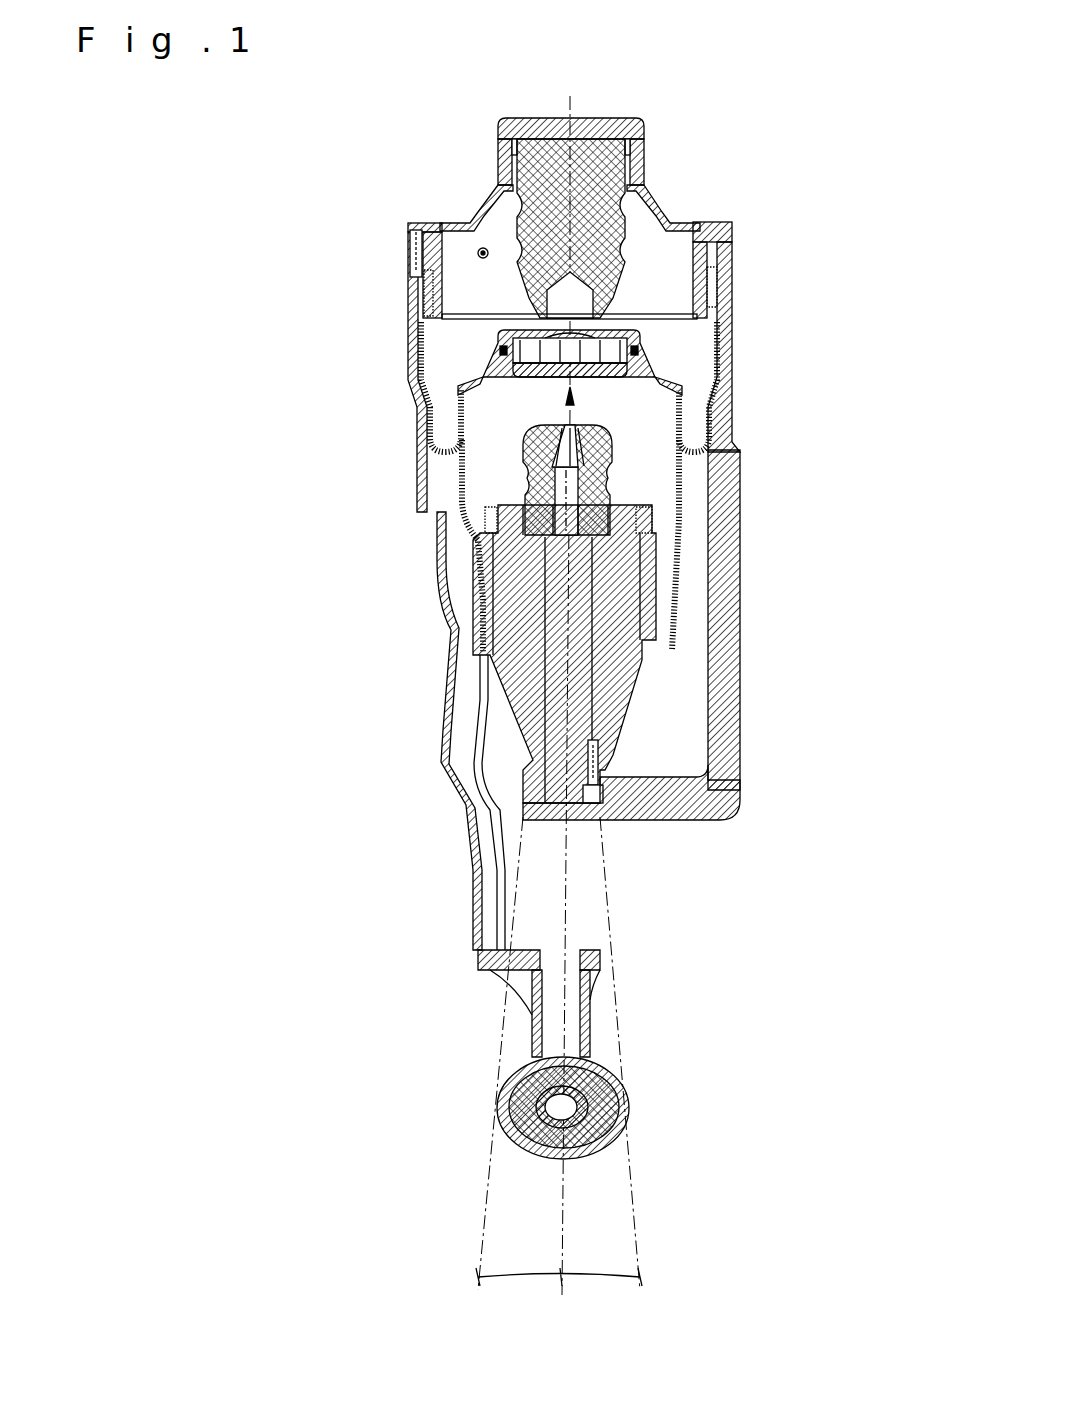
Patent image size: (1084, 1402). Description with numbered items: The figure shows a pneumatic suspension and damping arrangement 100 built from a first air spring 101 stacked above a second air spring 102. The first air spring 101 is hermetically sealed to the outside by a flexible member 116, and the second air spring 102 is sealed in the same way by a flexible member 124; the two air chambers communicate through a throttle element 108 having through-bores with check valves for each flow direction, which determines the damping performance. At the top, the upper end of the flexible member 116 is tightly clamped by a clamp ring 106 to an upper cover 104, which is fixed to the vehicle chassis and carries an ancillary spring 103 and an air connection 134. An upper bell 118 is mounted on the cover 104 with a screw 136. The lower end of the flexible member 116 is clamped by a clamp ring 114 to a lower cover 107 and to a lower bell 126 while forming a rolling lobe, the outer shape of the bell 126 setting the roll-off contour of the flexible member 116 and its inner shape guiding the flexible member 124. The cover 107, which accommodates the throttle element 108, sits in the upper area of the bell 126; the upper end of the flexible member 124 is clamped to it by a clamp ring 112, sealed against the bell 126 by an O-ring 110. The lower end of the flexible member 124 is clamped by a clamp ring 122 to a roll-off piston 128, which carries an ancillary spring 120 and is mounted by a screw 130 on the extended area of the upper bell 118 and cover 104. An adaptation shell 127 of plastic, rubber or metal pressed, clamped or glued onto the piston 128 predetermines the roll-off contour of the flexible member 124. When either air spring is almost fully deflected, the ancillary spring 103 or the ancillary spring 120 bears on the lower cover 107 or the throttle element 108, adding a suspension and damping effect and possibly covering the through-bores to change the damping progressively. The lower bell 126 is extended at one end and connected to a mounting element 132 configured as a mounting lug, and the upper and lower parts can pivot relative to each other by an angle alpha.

The suspension and damping arrangement 100 is at (546, 63).
The first air spring 101 is at (450, 353).
The second air spring 102 is at (490, 478).
The ancillary spring 103 is at (620, 136).
The upper cover 104 is at (642, 170).
The clamp ring 106 is at (733, 262).
The lower cover 107 is at (643, 333).
The throttle element 108 is at (640, 343).
The O-ring 110 is at (636, 351).
The clamp ring 112 is at (630, 364).
The clamp ring 114 is at (678, 389).
The flexible member 116 is at (684, 415).
The upper bell 118 is at (652, 496).
The ancillary spring 120 is at (612, 488).
The clamp ring 122 is at (646, 511).
The flexible member 124 is at (655, 585).
The lower bell 126 is at (660, 630).
The adaptation shell 127 is at (730, 681).
The roll-off piston 128 is at (722, 793).
The screw 130 is at (600, 812).
The mounting element 132 is at (598, 968).
The air connection 134 is at (479, 250).
The screw 136 is at (412, 233).